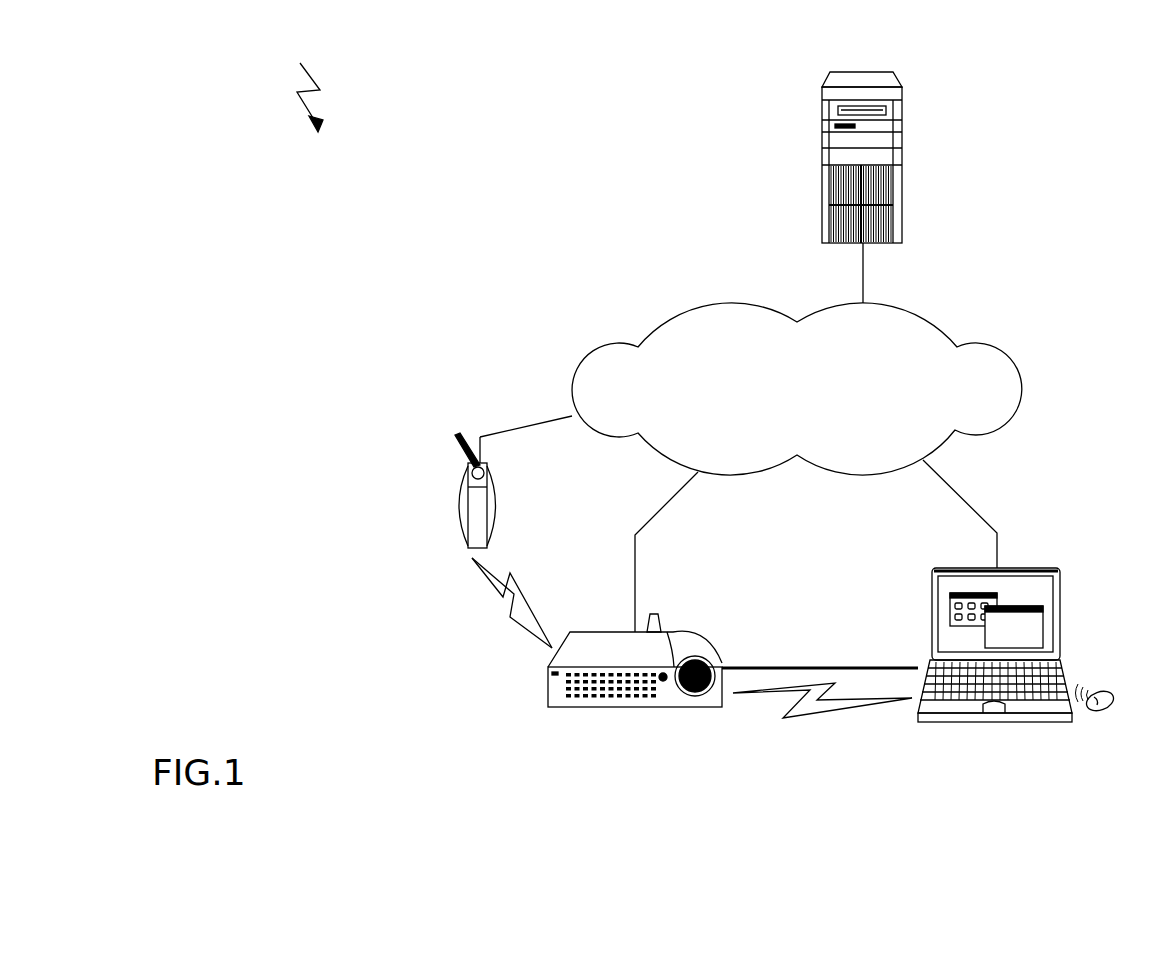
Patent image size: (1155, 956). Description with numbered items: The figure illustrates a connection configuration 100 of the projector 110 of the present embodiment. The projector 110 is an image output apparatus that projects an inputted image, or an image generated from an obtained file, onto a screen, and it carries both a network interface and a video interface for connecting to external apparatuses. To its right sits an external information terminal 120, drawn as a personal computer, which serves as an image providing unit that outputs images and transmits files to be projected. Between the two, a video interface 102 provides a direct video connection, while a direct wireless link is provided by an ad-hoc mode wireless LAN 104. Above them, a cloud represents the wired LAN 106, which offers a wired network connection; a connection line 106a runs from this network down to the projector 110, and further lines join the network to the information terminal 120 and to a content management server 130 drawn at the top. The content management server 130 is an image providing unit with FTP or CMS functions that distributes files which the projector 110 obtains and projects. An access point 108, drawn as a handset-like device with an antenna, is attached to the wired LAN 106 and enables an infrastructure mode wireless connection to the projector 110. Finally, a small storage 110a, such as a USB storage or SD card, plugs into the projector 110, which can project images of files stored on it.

The connection configuration 100 is at (320, 61).
The video interface 102 is at (830, 667).
The ad-hoc mode wireless LAN 104 is at (805, 712).
The wired LAN 106 is at (1022, 386).
The network connection line 106a is at (672, 500).
The access point 108 is at (458, 508).
The projector 110 is at (548, 690).
The storage 110a is at (652, 612).
The information terminal 120 is at (1060, 625).
The content management server 130 is at (902, 168).